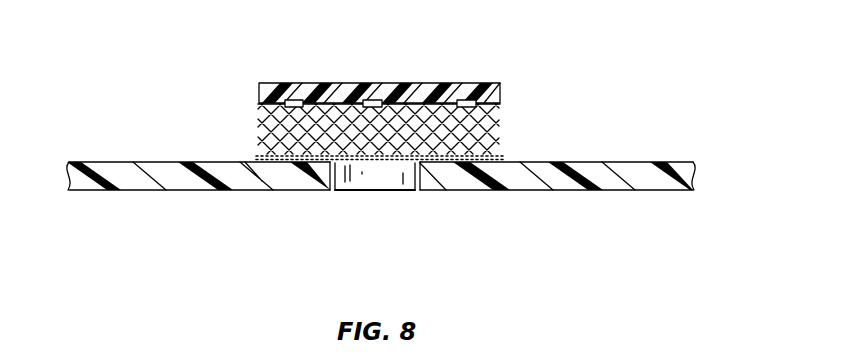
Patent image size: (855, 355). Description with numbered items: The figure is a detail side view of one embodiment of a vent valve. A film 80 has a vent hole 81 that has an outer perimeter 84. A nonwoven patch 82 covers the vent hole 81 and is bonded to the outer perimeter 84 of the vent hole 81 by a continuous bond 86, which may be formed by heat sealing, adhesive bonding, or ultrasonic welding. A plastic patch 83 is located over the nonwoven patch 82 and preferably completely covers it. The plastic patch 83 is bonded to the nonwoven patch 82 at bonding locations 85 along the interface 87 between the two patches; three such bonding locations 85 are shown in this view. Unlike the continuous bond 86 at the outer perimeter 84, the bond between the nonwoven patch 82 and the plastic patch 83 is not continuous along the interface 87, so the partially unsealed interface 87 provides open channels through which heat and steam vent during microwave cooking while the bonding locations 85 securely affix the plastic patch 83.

The film 80 is at (170, 173).
The vent hole 81 is at (375, 196).
The nonwoven patch 82 is at (514, 127).
The plastic patch 83 is at (512, 83).
The outer perimeter 84 is at (293, 167).
The bonding locations 85 is at (296, 98).
The continuous bond 86 is at (251, 156).
The interface 87 is at (512, 104).